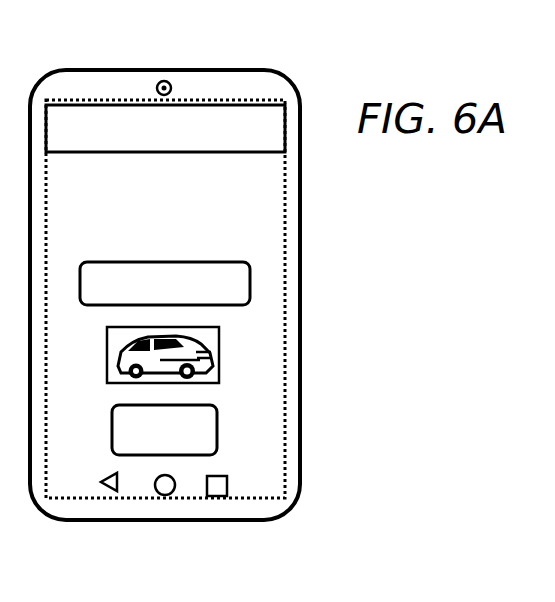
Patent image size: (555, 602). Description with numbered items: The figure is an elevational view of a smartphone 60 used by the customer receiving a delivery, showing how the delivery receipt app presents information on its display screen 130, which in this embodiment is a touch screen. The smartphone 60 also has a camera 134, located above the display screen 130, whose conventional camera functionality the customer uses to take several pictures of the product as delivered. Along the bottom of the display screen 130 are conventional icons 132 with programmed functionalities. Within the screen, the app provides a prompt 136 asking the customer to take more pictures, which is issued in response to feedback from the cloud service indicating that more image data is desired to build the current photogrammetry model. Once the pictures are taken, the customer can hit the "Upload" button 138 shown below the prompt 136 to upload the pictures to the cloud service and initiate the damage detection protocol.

The smartphone 60 is at (85, 70).
The camera 134 is at (169, 81).
The display screen 130 is at (285, 358).
The prompt 136 is at (250, 270).
The "Upload" button 138 is at (217, 425).
The icons 132 is at (215, 498).